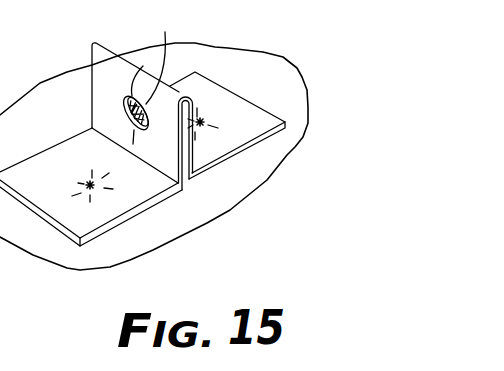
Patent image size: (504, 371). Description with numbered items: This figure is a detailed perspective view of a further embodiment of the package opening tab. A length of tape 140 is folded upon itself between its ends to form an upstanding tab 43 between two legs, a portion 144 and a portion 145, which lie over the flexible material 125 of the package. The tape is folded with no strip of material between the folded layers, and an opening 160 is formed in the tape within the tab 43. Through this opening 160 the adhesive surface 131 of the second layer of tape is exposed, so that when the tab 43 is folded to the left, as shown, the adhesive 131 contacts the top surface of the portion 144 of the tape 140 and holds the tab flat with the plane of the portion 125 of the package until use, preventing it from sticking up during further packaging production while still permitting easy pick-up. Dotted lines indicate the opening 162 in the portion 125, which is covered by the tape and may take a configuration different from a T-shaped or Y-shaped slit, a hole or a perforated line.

The tab 43 is at (92, 66).
The flexible material of the package 125 is at (262, 50).
The adhesive surface 131 is at (158, 52).
The tape 140 is at (217, 167).
The portion of the tape 144 is at (62, 229).
The portion of the tape 145 is at (250, 78).
The opening 160 is at (124, 118).
The opening in the portion 162 is at (80, 183).